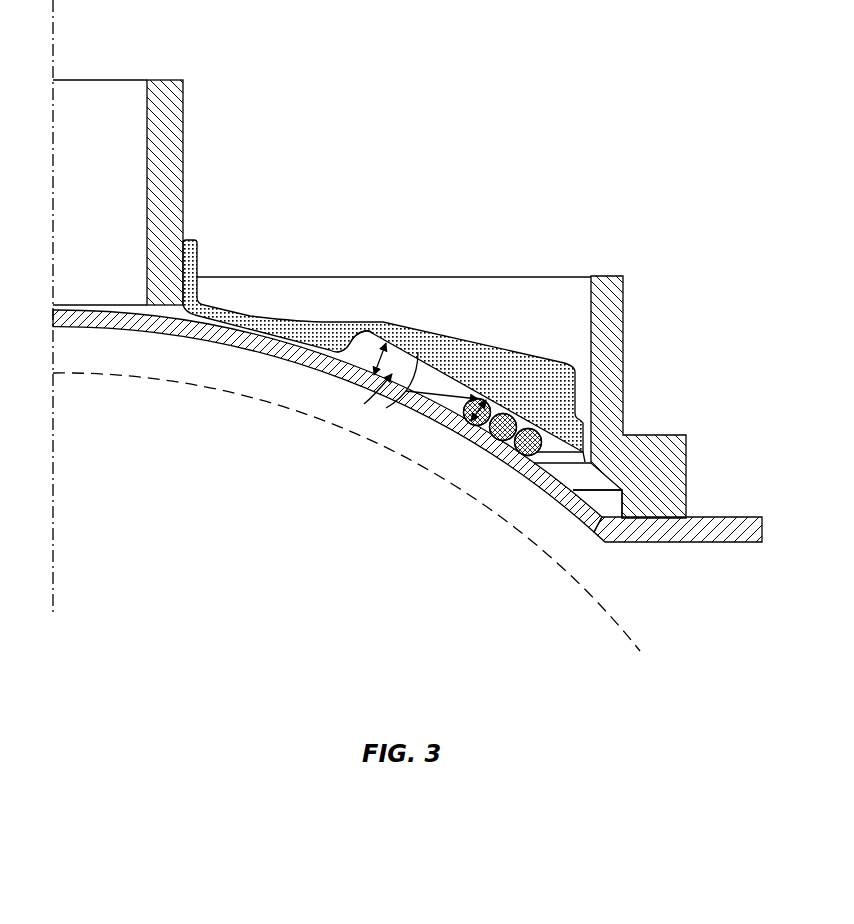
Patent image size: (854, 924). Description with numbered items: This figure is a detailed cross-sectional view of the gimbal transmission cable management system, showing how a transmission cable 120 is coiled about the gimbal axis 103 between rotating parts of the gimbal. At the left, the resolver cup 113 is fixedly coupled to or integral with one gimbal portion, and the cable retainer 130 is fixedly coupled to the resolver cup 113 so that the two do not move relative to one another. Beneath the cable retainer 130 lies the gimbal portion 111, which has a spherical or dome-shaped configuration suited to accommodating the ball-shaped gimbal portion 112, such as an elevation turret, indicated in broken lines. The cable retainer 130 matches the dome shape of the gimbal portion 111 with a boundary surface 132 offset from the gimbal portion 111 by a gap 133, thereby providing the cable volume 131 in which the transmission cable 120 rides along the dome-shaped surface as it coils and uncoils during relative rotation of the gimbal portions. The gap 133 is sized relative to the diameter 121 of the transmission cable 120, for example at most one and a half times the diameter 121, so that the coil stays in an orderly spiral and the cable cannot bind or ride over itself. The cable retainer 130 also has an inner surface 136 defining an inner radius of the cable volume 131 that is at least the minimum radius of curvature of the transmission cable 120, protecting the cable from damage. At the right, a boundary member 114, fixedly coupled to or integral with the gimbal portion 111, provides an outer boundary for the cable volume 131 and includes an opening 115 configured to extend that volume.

The gimbal axis 103 is at (53, 47).
The gimbal portion 111 is at (735, 517).
The gimbal portion 112 is at (628, 635).
The resolver cup 113 is at (183, 138).
The boundary member 114 is at (623, 333).
The opening 115 is at (606, 508).
The transmission cable 120 is at (453, 406).
The diameter 121 is at (490, 440).
The cable retainer 130 is at (440, 337).
The cable volume 131 is at (362, 399).
The boundary surface 132 is at (393, 391).
The gap 133 is at (370, 362).
The inner surface 136 is at (372, 336).